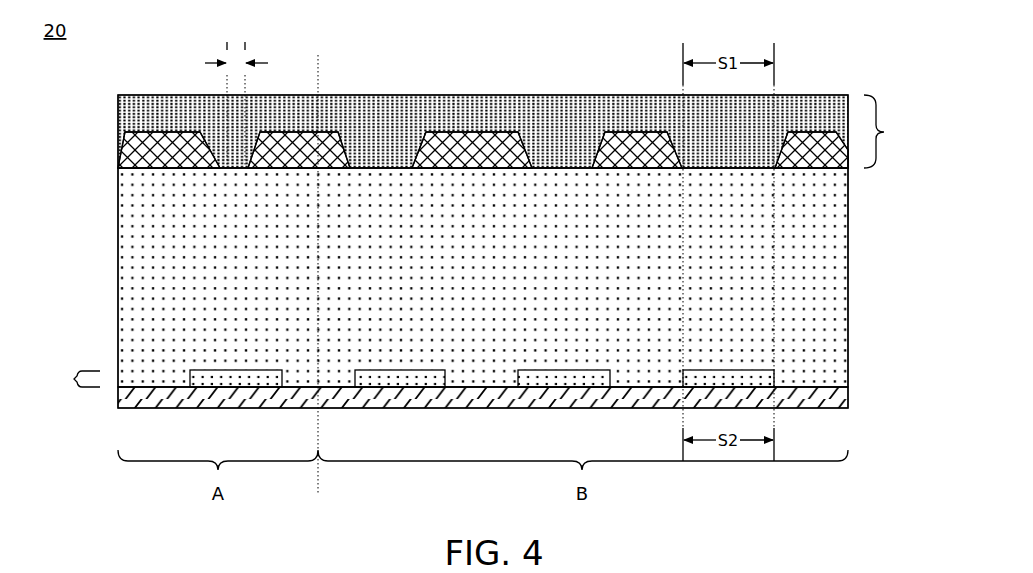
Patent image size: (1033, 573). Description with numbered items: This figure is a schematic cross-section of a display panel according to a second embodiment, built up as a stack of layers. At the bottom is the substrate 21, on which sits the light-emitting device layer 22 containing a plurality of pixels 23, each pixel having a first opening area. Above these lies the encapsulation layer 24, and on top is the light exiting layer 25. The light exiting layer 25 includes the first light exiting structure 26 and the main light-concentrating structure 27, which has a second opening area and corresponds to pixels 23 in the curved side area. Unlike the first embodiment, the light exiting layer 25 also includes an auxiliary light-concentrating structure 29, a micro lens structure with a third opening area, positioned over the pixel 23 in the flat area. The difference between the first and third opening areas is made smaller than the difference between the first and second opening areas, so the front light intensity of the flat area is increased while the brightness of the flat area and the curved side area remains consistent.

The substrate 21 is at (848, 395).
The light-emitting device layer 22 is at (71, 379).
The pixel 23 is at (728, 368).
The encapsulation layer 24 is at (848, 278).
The light exiting layer 25 is at (897, 131).
The first light exiting structure 26 is at (822, 169).
The main light-concentrating structure 27 is at (567, 105).
The auxiliary light-concentrating structure 29 is at (229, 102).